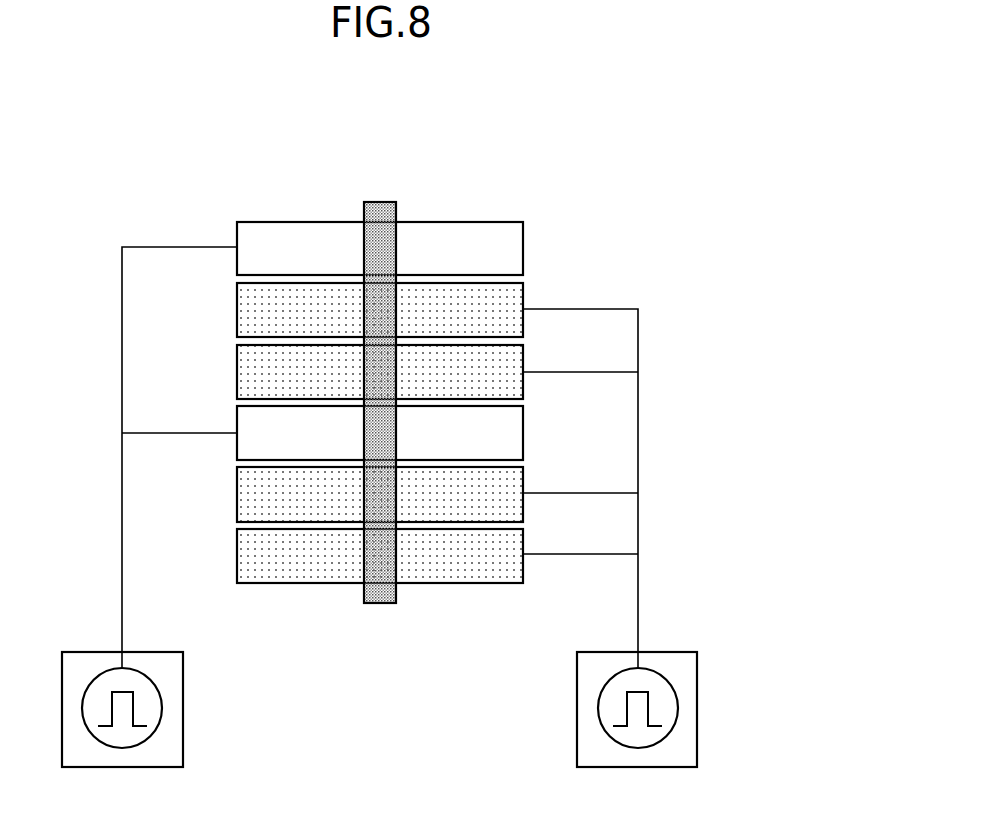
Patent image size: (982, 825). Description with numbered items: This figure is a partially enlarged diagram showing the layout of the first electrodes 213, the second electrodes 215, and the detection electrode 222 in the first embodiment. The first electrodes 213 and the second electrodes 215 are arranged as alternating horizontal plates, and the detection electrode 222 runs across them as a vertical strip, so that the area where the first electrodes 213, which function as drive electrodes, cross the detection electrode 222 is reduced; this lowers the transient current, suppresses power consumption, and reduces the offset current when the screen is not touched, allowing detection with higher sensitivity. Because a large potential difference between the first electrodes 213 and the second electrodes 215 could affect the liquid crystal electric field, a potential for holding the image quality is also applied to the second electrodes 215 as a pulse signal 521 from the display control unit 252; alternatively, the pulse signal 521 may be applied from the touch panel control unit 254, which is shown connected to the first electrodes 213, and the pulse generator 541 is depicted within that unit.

The first electrodes 213 is at (510, 253).
The second electrodes 215 is at (510, 299).
The detection electrode 222 is at (382, 210).
The touch panel control unit 254 is at (183, 738).
The first pulse generator 541 is at (162, 697).
The display control unit 252 is at (697, 738).
The pulse signal 521 is at (677, 697).